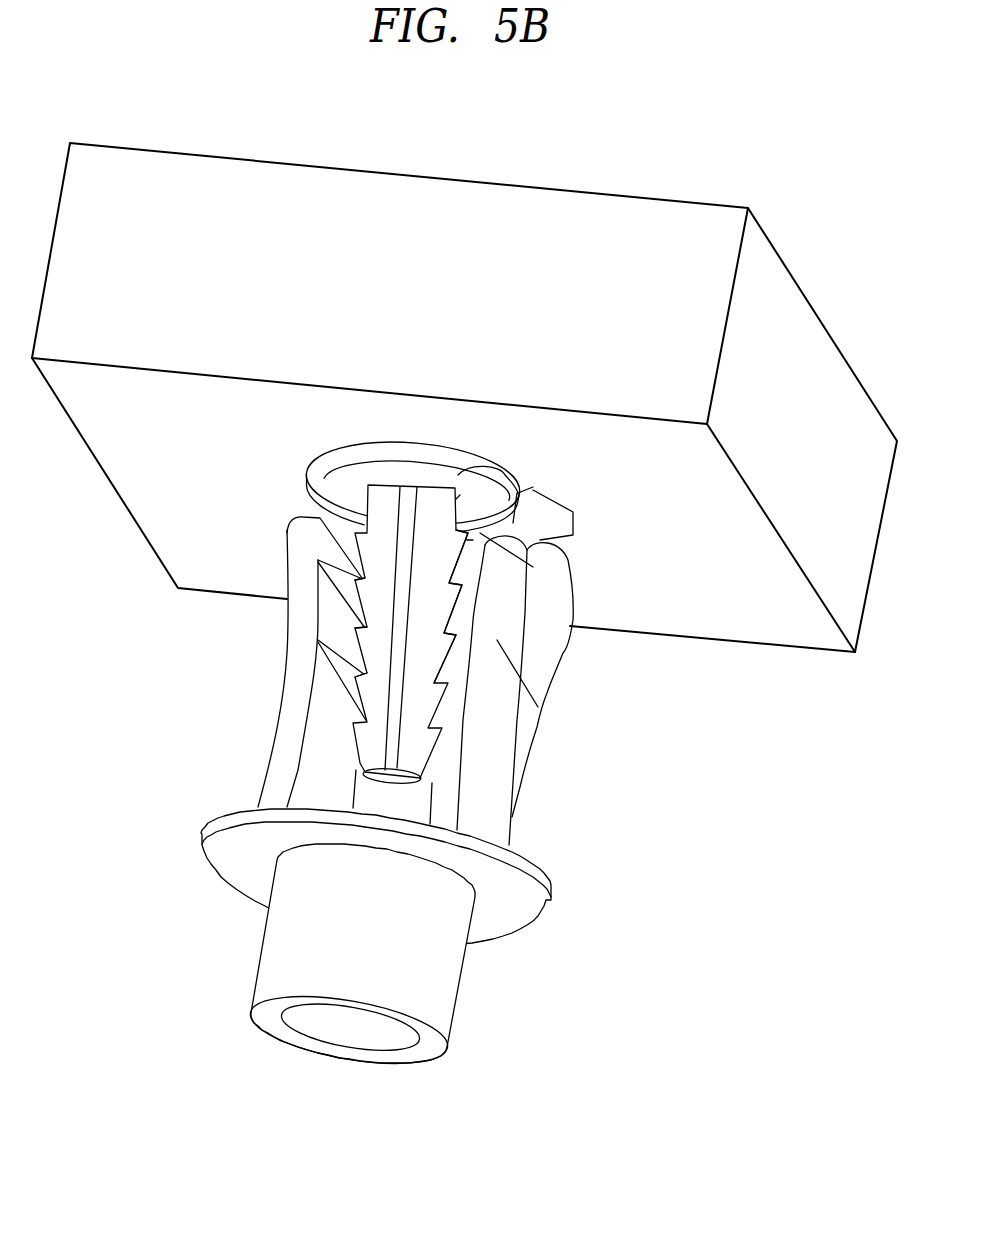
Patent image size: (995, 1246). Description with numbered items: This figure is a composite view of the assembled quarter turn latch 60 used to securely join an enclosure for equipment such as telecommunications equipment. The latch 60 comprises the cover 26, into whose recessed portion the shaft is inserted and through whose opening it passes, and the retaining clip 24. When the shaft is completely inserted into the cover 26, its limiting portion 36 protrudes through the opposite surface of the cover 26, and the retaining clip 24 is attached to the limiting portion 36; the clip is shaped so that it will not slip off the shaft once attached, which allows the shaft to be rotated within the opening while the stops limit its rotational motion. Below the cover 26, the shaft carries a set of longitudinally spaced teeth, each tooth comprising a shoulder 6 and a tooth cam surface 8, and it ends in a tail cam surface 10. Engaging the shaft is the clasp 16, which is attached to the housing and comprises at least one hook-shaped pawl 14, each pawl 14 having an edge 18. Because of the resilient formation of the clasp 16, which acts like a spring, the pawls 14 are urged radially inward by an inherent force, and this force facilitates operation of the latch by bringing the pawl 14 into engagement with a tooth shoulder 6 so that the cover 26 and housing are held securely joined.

The shoulder 6 is at (447, 582).
The tooth cam surface 8 is at (460, 623).
The tail cam surface 10 is at (437, 518).
The pawl 14 is at (513, 722).
The clasp 16 is at (222, 761).
The edge 18 is at (455, 577).
The retaining clip 24 is at (348, 454).
The cover 26 is at (675, 219).
The limiting portion 36 is at (467, 530).
The latch 60 is at (504, 142).